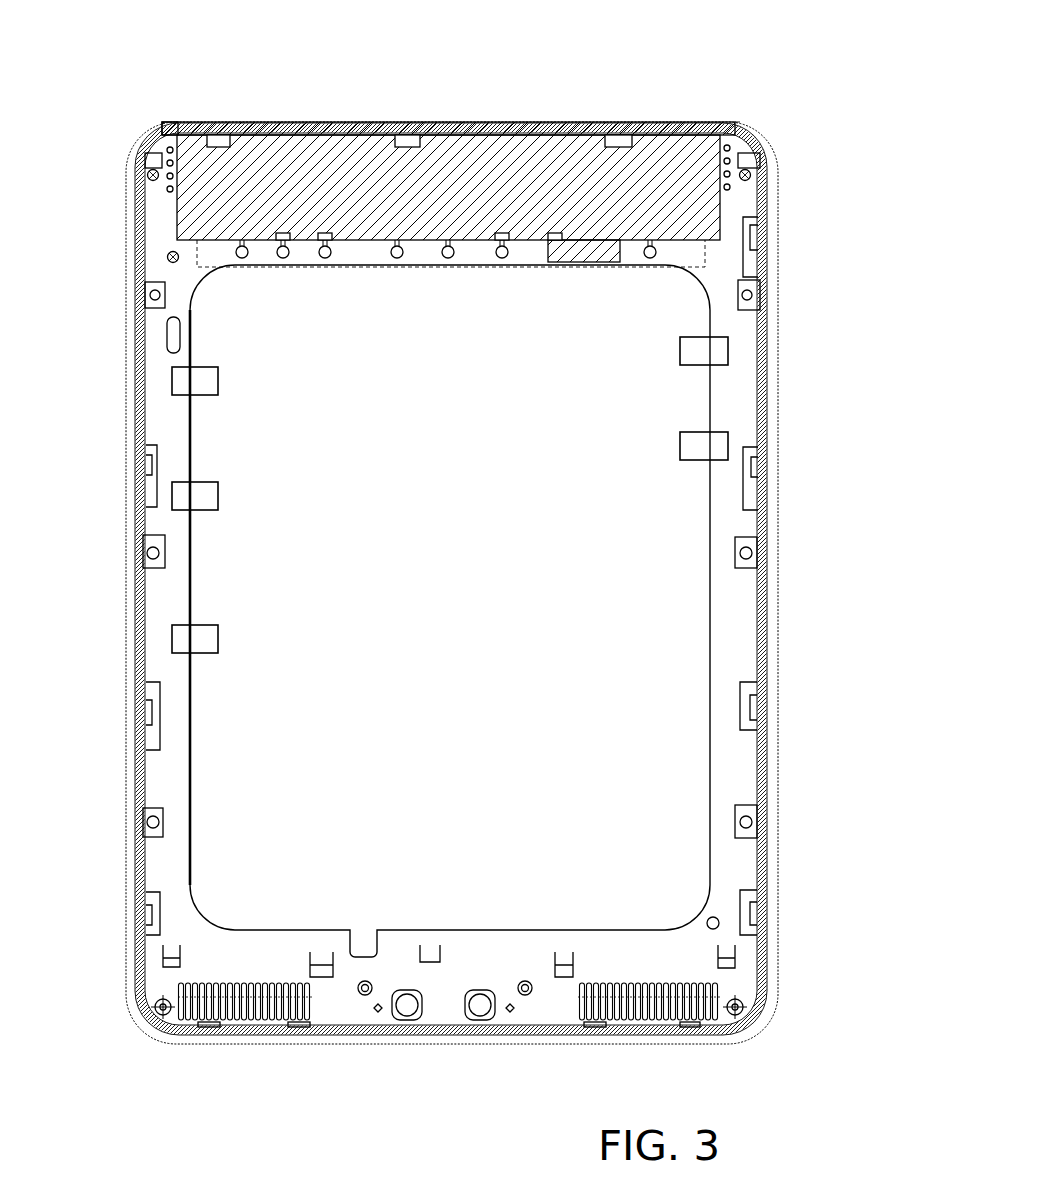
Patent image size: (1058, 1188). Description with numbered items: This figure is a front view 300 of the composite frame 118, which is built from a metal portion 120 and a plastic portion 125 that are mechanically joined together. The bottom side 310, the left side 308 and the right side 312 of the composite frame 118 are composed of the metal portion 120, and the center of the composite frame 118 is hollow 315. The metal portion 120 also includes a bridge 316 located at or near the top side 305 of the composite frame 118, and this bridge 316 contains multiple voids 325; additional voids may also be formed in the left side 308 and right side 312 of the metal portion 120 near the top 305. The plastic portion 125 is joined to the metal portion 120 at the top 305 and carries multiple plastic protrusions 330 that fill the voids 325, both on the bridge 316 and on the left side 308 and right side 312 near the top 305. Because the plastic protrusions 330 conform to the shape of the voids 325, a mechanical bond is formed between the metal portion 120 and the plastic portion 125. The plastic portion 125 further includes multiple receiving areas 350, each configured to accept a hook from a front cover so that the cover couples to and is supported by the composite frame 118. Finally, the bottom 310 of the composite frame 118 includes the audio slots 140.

The front view 300 is at (540, 1158).
The composite frame 118 is at (760, 85).
The plastic portion 125 is at (633, 122).
The receiving area 350 is at (404, 135).
The top side 305 is at (566, 72).
The plastic protrusions 330 is at (640, 333).
The voids 325 is at (246, 256).
The bridge 316 is at (370, 268).
The hollow center 315 is at (463, 616).
The metal portion 120 is at (710, 735).
The left side 308 is at (104, 586).
The right side 312 is at (796, 586).
The bottom side 310 is at (449, 1016).
The audio slots 140 is at (626, 1000).